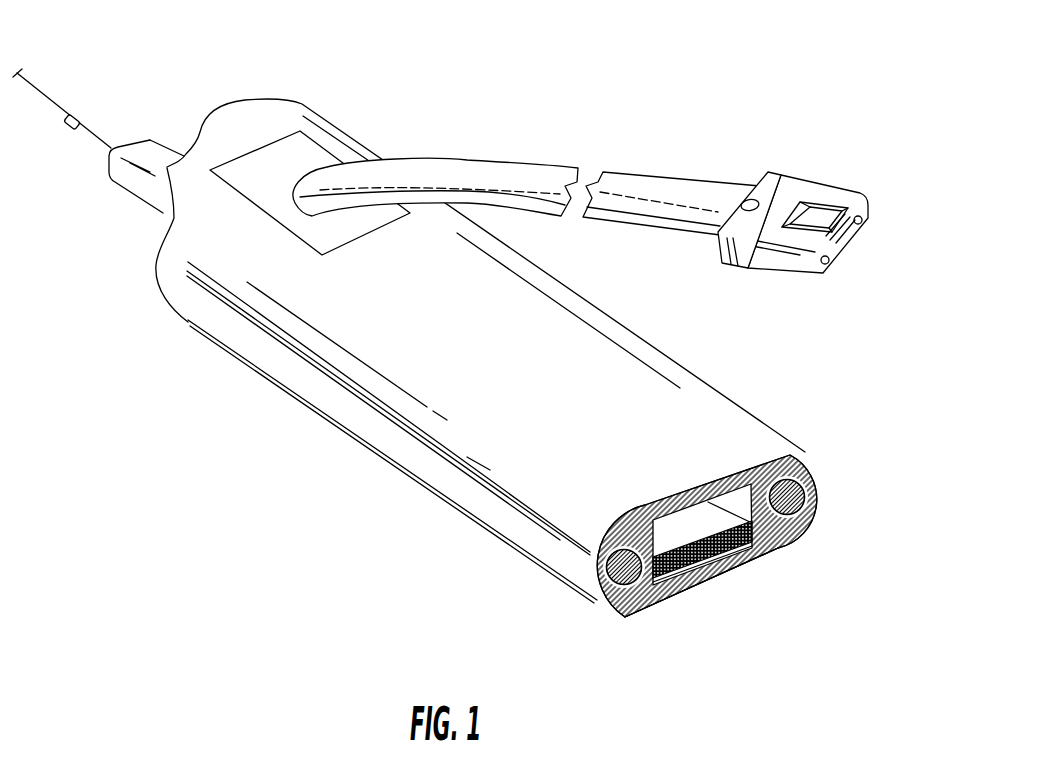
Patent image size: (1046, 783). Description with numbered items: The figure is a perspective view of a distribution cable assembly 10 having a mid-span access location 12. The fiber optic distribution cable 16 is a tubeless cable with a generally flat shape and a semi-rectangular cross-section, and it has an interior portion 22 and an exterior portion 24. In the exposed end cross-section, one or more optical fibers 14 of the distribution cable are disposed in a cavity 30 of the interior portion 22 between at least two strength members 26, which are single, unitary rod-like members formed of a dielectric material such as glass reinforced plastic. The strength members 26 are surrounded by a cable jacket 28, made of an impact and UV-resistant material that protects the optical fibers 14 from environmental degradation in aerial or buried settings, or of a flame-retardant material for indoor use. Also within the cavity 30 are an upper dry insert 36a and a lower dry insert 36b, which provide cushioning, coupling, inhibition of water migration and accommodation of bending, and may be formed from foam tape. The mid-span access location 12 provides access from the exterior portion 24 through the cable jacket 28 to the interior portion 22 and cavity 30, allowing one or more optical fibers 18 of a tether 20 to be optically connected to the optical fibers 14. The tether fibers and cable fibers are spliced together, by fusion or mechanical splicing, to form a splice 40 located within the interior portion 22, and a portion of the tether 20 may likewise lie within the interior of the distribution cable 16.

The distribution cable assembly 10 is at (441, 345).
The mid-span access location 12 is at (313, 158).
The optical fibers 14 is at (52, 100).
The fiber optic distribution cable 16 is at (380, 427).
The optical fibers 18 is at (98, 140).
The tether 20 is at (557, 173).
The interior portion 22 is at (717, 551).
The exterior portion 24 is at (537, 490).
The strength members 26 is at (800, 498).
The cable jacket 28 is at (766, 556).
The cavity 30 is at (689, 577).
The upper dry insert 36a is at (668, 553).
The lower dry insert 36b is at (662, 585).
The splice 40 is at (82, 113).